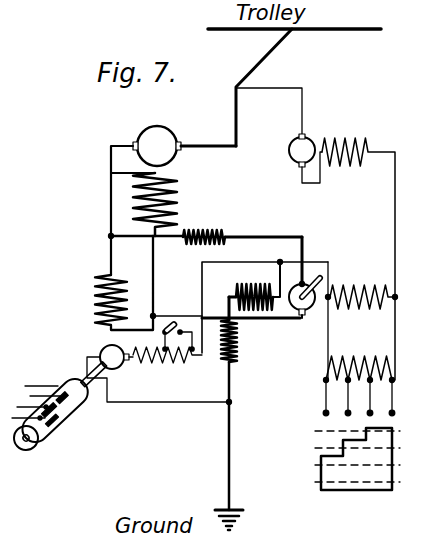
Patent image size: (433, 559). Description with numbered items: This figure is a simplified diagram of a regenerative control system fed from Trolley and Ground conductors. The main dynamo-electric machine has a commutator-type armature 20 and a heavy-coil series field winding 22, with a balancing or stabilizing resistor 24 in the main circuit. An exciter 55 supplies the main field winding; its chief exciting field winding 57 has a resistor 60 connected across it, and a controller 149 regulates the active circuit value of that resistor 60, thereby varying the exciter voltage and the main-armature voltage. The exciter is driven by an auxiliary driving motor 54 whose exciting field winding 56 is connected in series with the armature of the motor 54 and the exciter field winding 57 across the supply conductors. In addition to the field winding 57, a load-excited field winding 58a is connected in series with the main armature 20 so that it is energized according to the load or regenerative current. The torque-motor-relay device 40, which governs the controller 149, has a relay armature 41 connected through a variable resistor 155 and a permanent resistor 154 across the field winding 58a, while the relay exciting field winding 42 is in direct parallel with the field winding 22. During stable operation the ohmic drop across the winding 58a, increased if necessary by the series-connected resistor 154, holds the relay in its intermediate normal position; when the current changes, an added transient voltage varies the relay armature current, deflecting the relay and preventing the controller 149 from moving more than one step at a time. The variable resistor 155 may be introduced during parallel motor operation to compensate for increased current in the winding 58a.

The commutator-type armature 20 is at (165, 136).
The field winding 22 is at (172, 196).
The balancing or stabilizing resistor 24 is at (206, 231).
The relay exciting field winding 42 is at (98, 298).
The relay armature 41 is at (104, 350).
The torque-motor-relay device 40 is at (58, 373).
The variable resistor 155 is at (167, 355).
The permanent resistor 154 is at (258, 337).
The field winding 58a is at (258, 281).
The auxiliary generator or exciter 55 is at (308, 313).
The auxiliary driving motor 54 is at (290, 145).
The exciting field winding 56 is at (352, 142).
The exciting field winding 57 is at (360, 290).
The resistor 60 is at (366, 362).
The controller 149 is at (360, 489).